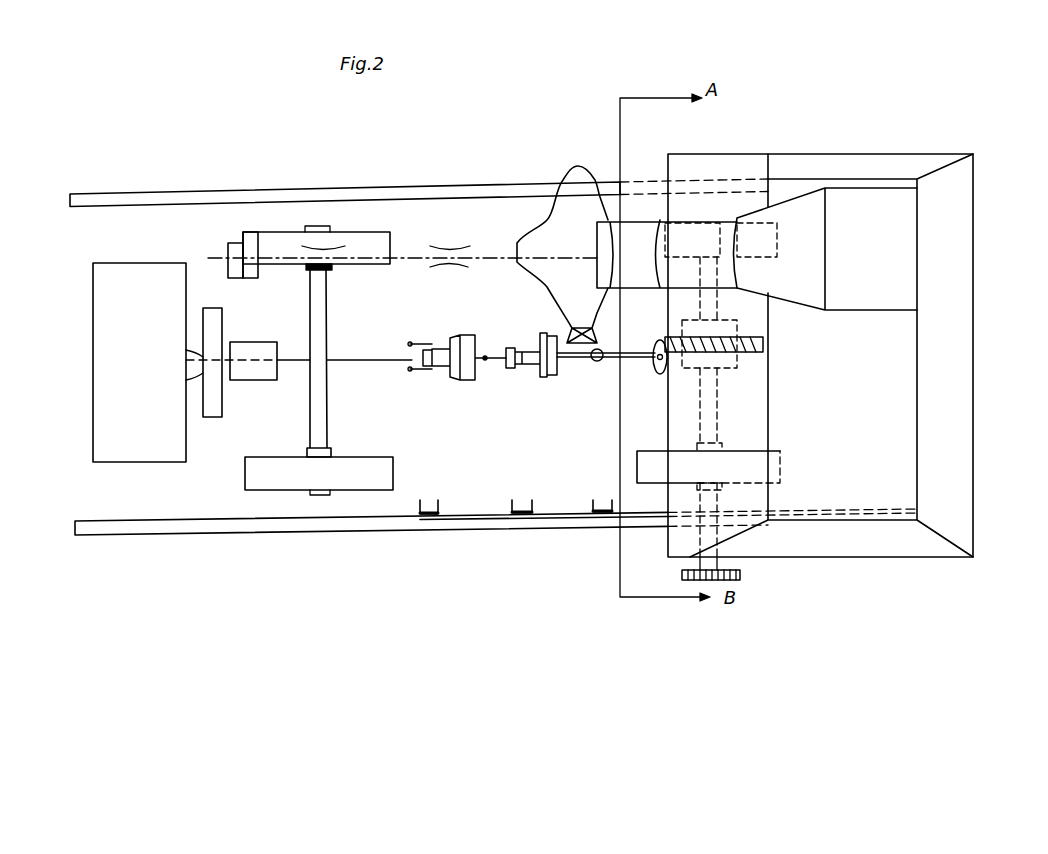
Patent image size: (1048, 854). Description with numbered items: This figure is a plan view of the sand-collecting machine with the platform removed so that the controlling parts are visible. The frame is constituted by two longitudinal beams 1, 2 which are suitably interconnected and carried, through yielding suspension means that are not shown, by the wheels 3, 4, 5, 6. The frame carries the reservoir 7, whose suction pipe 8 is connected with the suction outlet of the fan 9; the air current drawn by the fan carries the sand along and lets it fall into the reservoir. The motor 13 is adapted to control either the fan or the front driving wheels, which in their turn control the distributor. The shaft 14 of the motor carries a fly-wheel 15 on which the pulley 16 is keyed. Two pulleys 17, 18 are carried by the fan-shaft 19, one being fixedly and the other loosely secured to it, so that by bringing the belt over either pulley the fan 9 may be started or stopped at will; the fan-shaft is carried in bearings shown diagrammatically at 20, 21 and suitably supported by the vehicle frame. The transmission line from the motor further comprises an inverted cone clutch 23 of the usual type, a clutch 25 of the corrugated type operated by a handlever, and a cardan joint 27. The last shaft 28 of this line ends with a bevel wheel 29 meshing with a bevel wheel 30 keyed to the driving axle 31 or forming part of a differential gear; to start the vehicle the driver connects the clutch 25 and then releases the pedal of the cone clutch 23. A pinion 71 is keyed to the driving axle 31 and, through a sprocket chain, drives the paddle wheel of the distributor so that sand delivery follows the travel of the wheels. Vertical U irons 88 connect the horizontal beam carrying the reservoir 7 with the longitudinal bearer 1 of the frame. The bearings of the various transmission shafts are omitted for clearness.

The longitudinal beam 1 is at (375, 527).
The longitudinal beam 2 is at (354, 190).
The wheel 3 is at (270, 482).
The wheel 4 is at (293, 240).
The wheel 5 is at (777, 225).
The wheel 6 is at (782, 483).
The reservoir 7 is at (885, 425).
The suction pipe 8 is at (687, 243).
The fan 9 is at (575, 168).
The motor 13 is at (140, 446).
The shaft 14 is at (336, 362).
The fly-wheel 15 is at (215, 408).
The pulley 16 is at (260, 356).
The pulley 17 is at (236, 252).
The pulley 18 is at (253, 248).
The fan-shaft 19 is at (417, 254).
The bearing 20 is at (327, 270).
The bearing 21 is at (447, 263).
The inverted cone clutch 23 is at (466, 368).
The clutch 25 is at (545, 372).
The cardan joint 27 is at (596, 362).
The shaft 28 is at (630, 350).
The bevel wheel 29 is at (657, 375).
The bevel wheel 30 is at (757, 348).
The driving axle 31 is at (710, 422).
The pinion 71 is at (742, 575).
The vertical U irons 88 is at (512, 510).